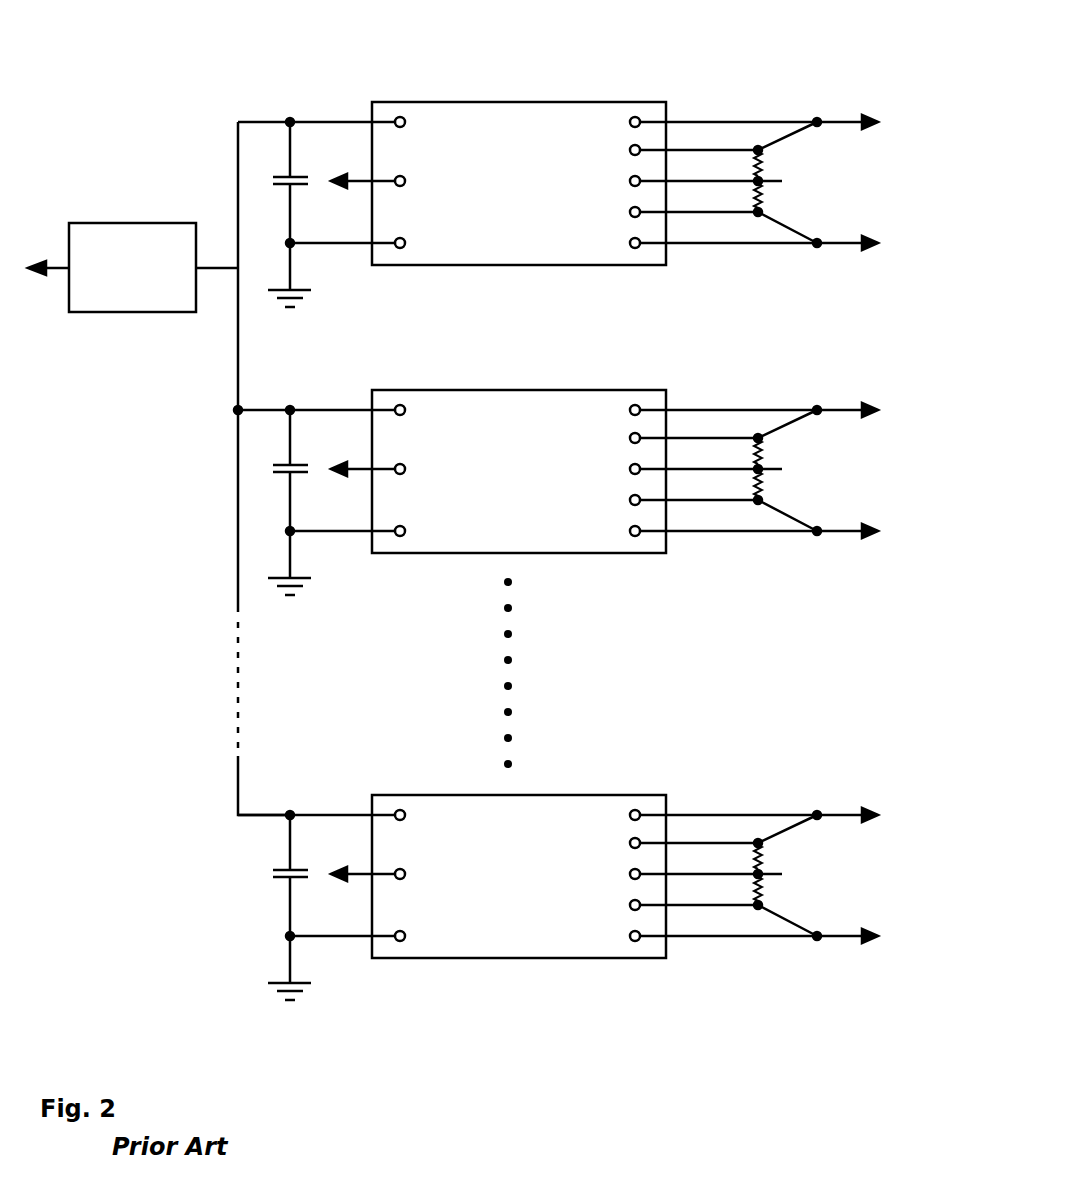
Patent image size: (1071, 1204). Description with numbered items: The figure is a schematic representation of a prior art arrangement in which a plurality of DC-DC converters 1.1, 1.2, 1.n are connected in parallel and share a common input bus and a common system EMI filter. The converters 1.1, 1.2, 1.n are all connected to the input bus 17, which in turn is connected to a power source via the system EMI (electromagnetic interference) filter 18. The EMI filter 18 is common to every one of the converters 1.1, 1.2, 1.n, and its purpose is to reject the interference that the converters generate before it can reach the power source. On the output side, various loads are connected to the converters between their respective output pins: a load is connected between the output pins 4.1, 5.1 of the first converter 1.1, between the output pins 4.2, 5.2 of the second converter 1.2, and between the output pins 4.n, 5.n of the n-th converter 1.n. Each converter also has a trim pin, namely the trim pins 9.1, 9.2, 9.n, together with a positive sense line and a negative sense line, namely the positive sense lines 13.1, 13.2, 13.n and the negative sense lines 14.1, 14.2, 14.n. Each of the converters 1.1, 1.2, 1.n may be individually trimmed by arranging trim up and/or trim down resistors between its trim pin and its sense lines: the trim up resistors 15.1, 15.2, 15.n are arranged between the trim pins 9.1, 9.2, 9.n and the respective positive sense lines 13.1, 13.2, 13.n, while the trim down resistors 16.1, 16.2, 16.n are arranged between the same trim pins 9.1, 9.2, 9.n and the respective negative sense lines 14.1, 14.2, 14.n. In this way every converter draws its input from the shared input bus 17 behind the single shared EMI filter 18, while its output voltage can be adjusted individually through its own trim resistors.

The DC-DC converter 1.1 is at (522, 102).
The DC-DC converter 1.2 is at (519, 447).
The DC-DC converter 1.n is at (519, 852).
The output pin 4.1 is at (641, 119).
The output pin 4.2 is at (754, 397).
The output pin 4.n is at (754, 802).
The output pin 5.1 is at (637, 248).
The output pin 5.2 is at (754, 564).
The output pin 5.n is at (754, 969).
The trim pin 9.1 is at (632, 180).
The trim pin 9.2 is at (667, 455).
The trim pin 9.n is at (667, 860).
The positive sense line 13.1 is at (724, 150).
The positive sense line 13.2 is at (723, 398).
The positive sense line 13.n is at (723, 803).
The negative sense line 14.1 is at (733, 215).
The negative sense line 14.2 is at (723, 543).
The negative sense line 14.n is at (723, 948).
The trim up resistor 15.1 is at (762, 165).
The trim up resistor 15.2 is at (805, 462).
The trim up resistor 15.n is at (805, 867).
The trim down resistor 16.1 is at (765, 195).
The trim down resistor 16.2 is at (805, 494).
The trim down resistor 16.n is at (805, 899).
The input bus 17 is at (238, 460).
The system EMI filter 18 is at (116, 297).